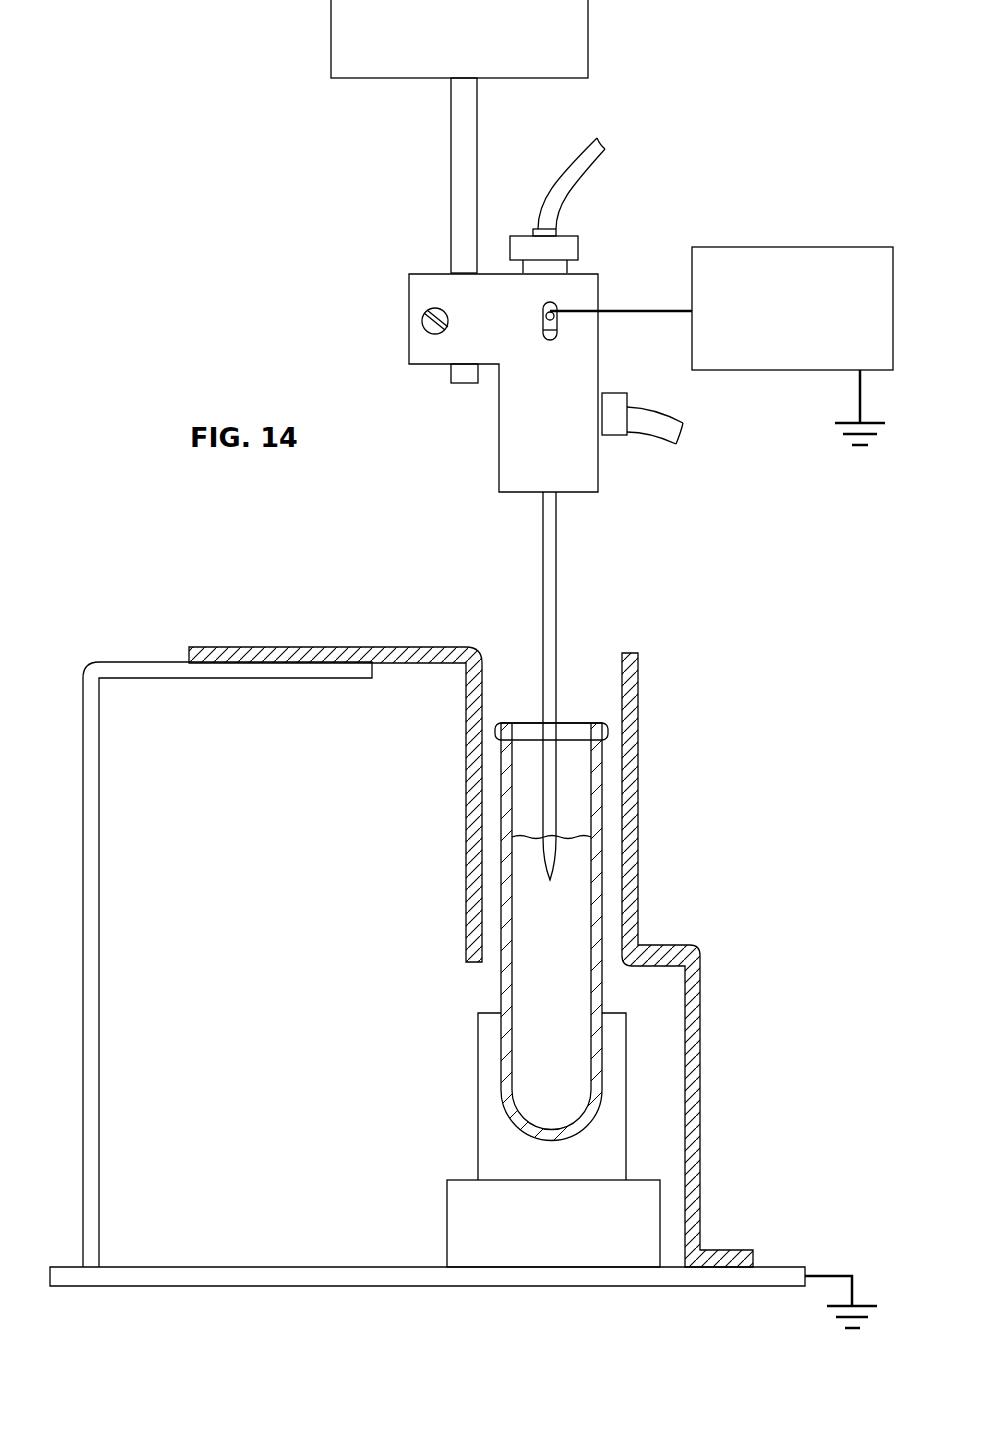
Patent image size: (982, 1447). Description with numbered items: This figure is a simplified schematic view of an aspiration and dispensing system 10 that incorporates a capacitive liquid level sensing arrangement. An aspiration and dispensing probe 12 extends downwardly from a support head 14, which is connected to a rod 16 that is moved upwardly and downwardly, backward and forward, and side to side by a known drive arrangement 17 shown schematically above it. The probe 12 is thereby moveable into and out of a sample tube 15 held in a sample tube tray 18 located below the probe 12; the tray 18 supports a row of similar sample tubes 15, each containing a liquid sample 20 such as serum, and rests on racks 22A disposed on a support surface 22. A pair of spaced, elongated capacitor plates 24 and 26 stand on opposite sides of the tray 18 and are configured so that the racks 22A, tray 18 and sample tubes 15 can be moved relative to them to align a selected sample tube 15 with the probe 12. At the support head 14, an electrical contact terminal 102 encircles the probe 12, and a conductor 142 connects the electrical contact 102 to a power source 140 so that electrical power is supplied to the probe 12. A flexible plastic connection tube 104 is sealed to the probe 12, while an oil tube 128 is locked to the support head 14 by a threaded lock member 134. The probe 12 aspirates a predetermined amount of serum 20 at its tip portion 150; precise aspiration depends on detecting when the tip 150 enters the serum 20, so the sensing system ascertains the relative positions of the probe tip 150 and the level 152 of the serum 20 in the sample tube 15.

The aspiration and dispensing system 10 is at (765, 530).
The aspiration and dispensing probe 12 is at (565, 569).
The support head 14 is at (494, 456).
The sample tube 15 is at (603, 795).
The rod 16 is at (452, 180).
The drive arrangement 17 is at (475, 40).
The sample tube tray 18 is at (480, 1068).
The liquid sample 20 is at (518, 995).
The support surface 22 is at (243, 1266).
The rack 22A is at (447, 1213).
The capacitor plate 24 is at (640, 695).
The capacitor plate 26 is at (468, 797).
The electrical contact terminal 102 is at (552, 342).
The plastic connection tube 104 is at (585, 166).
The oil tube 128 is at (653, 420).
The threaded lock member 134 is at (617, 437).
The power source 140 is at (812, 307).
The conductor 142 is at (637, 310).
The tip portion 150 is at (557, 866).
The level 152 is at (585, 833).